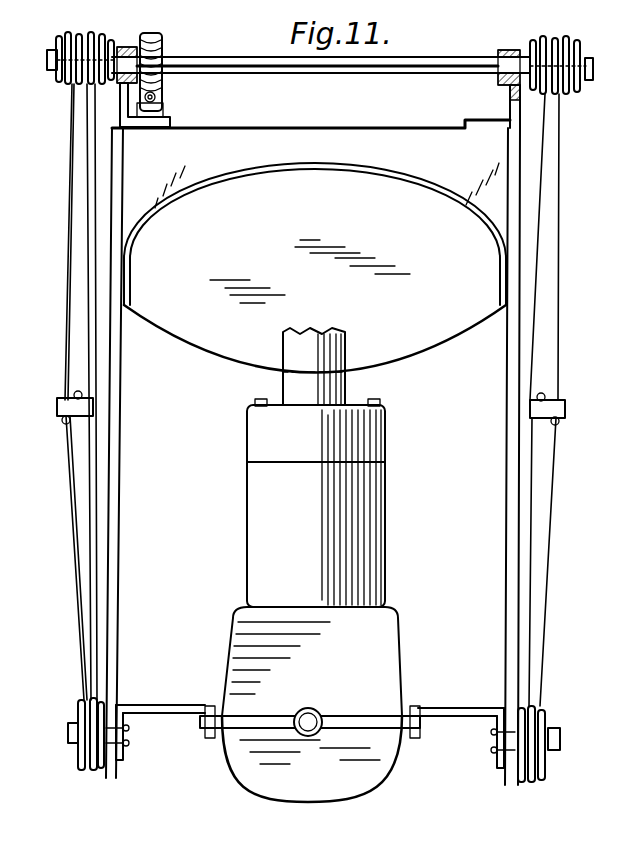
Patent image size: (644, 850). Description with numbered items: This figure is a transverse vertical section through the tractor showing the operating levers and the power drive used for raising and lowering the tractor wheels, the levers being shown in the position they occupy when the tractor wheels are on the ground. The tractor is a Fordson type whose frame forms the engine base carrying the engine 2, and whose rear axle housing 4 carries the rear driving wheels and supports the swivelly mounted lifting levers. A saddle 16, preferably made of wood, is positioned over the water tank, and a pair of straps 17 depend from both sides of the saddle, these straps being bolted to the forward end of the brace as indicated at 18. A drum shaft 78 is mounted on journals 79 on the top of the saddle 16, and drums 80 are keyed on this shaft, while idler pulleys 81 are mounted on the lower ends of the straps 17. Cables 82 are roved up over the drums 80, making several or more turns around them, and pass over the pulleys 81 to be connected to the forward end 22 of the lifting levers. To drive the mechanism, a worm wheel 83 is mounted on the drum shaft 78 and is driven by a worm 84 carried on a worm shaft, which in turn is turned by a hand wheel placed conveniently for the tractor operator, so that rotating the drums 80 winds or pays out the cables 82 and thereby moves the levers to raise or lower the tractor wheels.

The engine 2 is at (262, 558).
The rear axle housing 4 is at (252, 764).
The saddle 16 is at (414, 150).
The depending straps 17 is at (120, 512).
The bolted connection 18 is at (130, 744).
The forward end of lifting levers 22 is at (56, 405).
The drum shaft 78 is at (432, 58).
The journals 79 is at (127, 46).
The drums 80 is at (80, 46).
The idler pulleys 81 is at (78, 722).
The cables 82 is at (66, 252).
The worm wheel 83 is at (162, 40).
The worm 84 is at (156, 97).